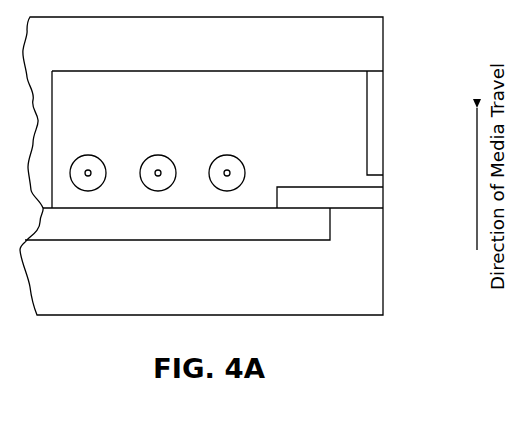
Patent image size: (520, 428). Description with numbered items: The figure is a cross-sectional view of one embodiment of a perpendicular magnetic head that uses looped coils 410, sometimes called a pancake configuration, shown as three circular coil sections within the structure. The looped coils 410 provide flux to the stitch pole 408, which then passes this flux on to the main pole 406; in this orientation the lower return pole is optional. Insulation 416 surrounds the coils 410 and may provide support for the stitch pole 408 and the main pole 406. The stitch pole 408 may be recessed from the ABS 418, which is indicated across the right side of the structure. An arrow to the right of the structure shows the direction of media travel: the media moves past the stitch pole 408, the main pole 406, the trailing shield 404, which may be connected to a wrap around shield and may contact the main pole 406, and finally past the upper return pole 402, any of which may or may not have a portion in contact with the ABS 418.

The upper return pole 402 is at (256, 53).
The trailing shield 404 is at (383, 103).
The main pole 406 is at (383, 192).
The stitch pole 408 is at (200, 235).
The looped coils 410 is at (89, 155).
The insulation 416 is at (295, 146).
The ABS 418 is at (388, 33).